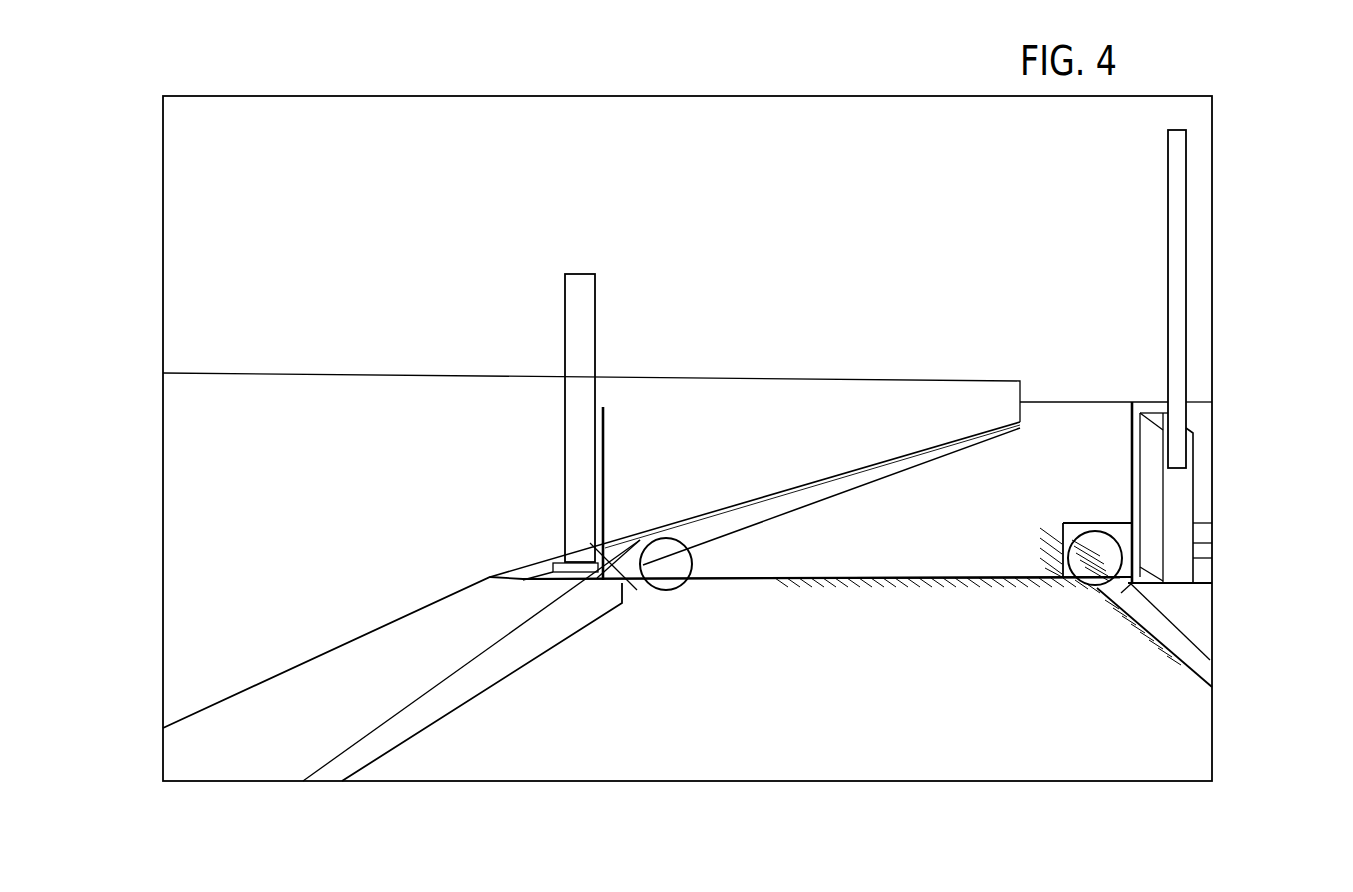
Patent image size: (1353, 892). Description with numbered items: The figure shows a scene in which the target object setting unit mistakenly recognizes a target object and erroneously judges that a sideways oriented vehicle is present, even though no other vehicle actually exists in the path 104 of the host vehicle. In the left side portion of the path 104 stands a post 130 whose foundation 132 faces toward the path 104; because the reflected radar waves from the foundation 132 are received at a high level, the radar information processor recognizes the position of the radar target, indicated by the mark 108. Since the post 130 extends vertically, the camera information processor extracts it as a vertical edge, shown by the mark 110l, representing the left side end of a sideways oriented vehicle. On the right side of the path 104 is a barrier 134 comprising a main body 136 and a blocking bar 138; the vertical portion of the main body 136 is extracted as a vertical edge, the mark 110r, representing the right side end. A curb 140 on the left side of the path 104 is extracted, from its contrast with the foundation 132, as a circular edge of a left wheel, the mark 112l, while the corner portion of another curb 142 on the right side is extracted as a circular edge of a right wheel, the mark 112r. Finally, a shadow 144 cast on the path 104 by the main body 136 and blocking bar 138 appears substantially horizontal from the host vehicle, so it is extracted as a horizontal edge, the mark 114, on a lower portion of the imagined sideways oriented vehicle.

The path 104 is at (763, 766).
The mark of position Por 108 is at (598, 585).
The vertical edge mark of left side end 110l is at (605, 441).
The vertical edge mark of right side end 110r is at (1132, 452).
The circular edge mark of left wheel 112l is at (670, 591).
The circular edge mark of right wheel 112r is at (1095, 527).
The horizontal edge mark 114 is at (742, 583).
The post 130 is at (572, 327).
The foundation 132 is at (560, 562).
The barrier 134 is at (1247, 356).
The main body 136 is at (1182, 495).
The blocking bar 138 is at (1180, 375).
The curb 140 is at (812, 497).
The curb 142 is at (1062, 552).
The shadow 144 is at (912, 580).